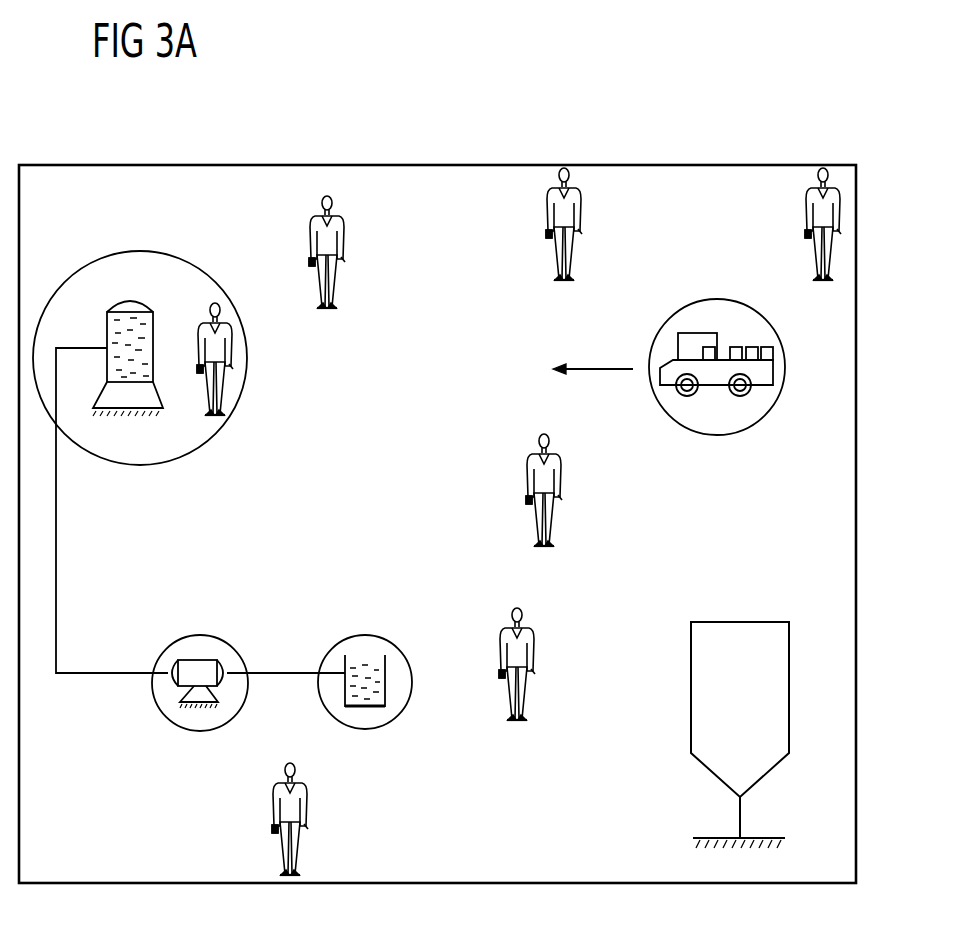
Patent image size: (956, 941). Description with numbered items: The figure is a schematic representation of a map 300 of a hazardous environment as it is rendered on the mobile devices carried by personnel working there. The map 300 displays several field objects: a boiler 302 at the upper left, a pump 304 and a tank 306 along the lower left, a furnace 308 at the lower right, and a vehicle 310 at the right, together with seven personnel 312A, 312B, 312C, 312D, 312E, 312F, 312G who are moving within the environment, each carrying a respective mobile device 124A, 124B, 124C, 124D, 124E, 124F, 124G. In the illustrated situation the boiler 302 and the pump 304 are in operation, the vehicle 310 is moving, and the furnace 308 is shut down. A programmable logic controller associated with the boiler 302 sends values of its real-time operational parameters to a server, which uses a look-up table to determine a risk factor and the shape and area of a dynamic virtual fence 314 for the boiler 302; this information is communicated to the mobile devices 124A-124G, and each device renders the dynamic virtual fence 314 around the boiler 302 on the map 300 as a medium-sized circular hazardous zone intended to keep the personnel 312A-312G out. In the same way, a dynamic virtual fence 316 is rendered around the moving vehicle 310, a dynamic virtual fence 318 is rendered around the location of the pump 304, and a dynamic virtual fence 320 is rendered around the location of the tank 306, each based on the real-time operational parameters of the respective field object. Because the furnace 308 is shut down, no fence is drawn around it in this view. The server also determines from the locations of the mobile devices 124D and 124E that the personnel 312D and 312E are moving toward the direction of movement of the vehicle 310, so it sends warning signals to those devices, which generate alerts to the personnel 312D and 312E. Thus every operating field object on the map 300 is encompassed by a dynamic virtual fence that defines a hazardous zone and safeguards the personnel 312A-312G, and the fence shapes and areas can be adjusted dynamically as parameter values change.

The map 300 is at (438, 165).
The boiler 302 is at (120, 299).
The pump 304 is at (171, 665).
The tank 306 is at (343, 660).
The furnace 308 is at (759, 622).
The vehicle 310 is at (695, 333).
The dynamic virtual fence 314 is at (170, 252).
The dynamic virtual fence 316 is at (770, 413).
The dynamic virtual fence 318 is at (206, 636).
The dynamic virtual fence 320 is at (382, 638).
The personnel 312A is at (235, 351).
The personnel 312B is at (345, 233).
The personnel 312C is at (575, 201).
The personnel 312D is at (812, 200).
The personnel 312E is at (557, 471).
The personnel 312F is at (528, 649).
The personnel 312G is at (302, 803).
The mobile device 124A is at (199, 364).
The mobile device 124B is at (309, 262).
The mobile device 124C is at (546, 235).
The mobile device 124D is at (805, 236).
The mobile device 124E is at (526, 502).
The mobile device 124F is at (499, 677).
The mobile device 124G is at (272, 832).